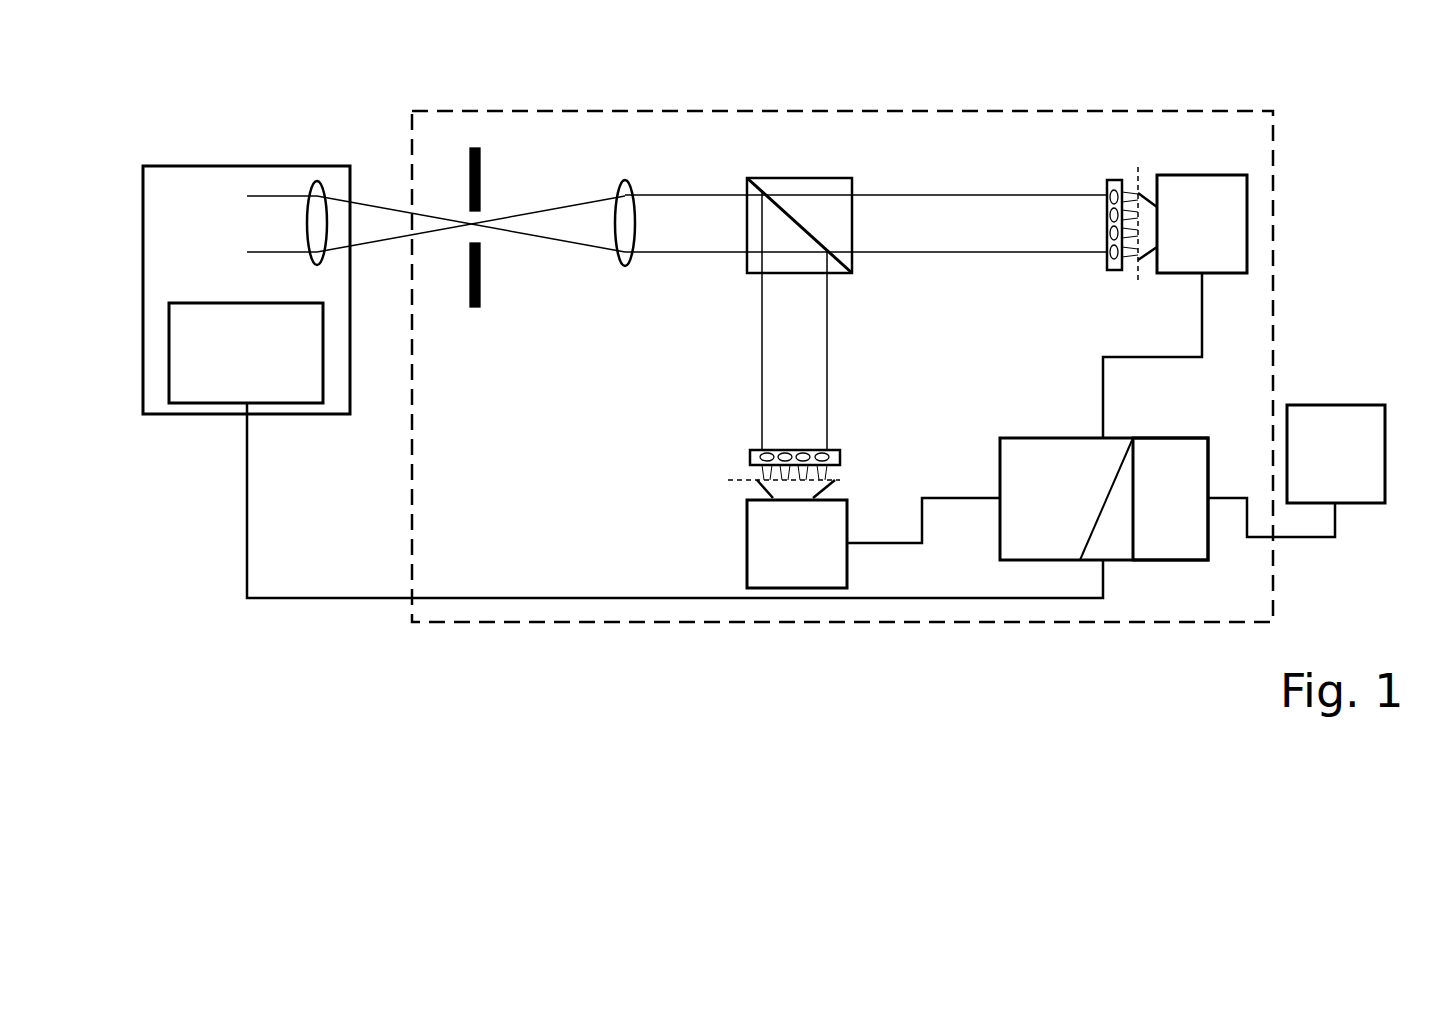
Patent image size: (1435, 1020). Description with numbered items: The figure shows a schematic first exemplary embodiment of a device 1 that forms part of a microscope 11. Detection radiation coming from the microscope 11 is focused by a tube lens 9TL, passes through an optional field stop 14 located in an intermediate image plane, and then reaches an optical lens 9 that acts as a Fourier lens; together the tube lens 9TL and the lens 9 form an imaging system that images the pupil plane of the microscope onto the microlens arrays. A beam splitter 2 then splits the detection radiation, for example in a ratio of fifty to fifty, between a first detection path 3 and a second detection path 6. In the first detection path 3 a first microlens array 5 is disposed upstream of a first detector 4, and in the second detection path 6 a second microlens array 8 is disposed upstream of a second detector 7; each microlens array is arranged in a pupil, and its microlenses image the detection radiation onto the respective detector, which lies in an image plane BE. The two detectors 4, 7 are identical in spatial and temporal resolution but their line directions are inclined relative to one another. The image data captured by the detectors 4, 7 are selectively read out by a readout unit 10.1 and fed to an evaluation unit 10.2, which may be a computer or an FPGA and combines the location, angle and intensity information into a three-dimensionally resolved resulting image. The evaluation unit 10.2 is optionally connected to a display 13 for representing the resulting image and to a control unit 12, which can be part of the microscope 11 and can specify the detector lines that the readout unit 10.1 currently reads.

The device 1 is at (717, 83).
The beam splitter 2 is at (833, 177).
The first detection path 3 is at (957, 193).
The first detector 4 is at (1213, 245).
The first microlens array 5 is at (1118, 177).
The second detection path 6 is at (760, 382).
The second detector 7 is at (806, 563).
The second microlens array 8 is at (840, 455).
The optical lens 9 is at (622, 183).
The tube lens 9TL is at (317, 190).
The readout unit 10.1 is at (1008, 513).
The evaluation unit 10.2 is at (1122, 513).
The microscope 11 is at (210, 272).
The control unit 12 is at (224, 373).
The display 13 is at (1314, 475).
The field stop 14 is at (468, 167).
The image plane BE is at (1140, 170).